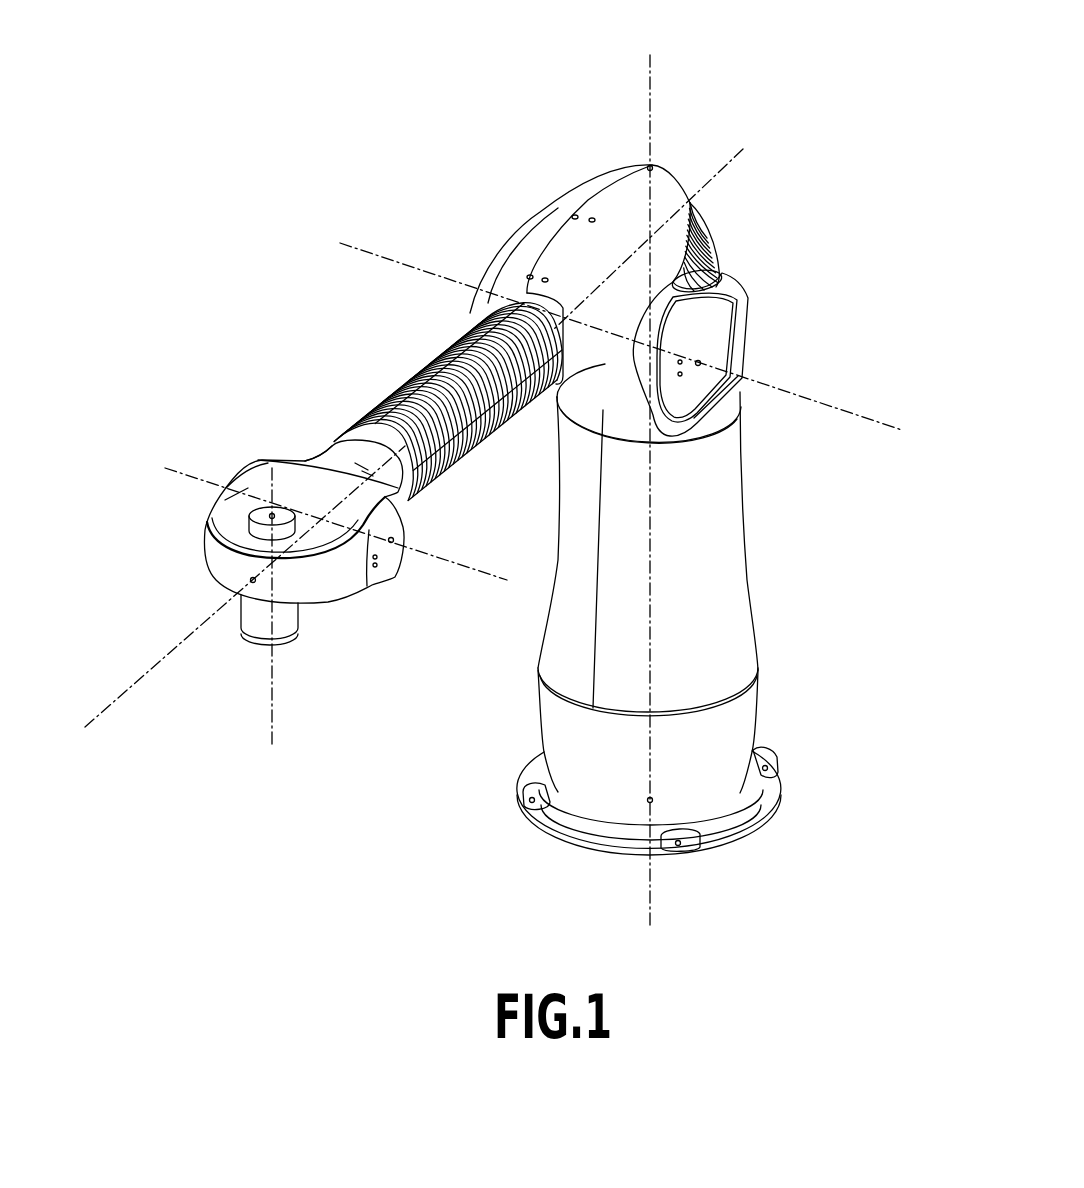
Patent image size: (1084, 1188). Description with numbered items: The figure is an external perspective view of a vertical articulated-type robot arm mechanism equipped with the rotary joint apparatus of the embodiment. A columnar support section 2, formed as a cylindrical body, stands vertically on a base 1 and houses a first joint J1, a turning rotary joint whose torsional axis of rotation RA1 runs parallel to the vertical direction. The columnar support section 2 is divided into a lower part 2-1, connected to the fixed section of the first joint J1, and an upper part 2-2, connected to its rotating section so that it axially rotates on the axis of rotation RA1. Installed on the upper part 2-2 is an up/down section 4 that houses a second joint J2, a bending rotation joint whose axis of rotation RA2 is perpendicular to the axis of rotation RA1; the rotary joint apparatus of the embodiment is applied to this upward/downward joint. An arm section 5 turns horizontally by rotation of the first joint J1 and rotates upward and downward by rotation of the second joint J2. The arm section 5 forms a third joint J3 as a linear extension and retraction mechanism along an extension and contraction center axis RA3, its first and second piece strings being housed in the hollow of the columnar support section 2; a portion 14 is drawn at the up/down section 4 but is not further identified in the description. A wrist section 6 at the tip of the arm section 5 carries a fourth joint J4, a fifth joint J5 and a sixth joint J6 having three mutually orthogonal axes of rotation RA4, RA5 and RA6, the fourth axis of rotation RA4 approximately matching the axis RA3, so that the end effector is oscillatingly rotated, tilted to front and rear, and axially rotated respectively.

The base 1 is at (780, 792).
The columnar support section 2 is at (721, 578).
The lower part 2-1 is at (758, 722).
The upper part 2-2 is at (742, 501).
The up/down section 4 is at (590, 302).
The arm section 5 is at (385, 335).
The wrist section 6 is at (296, 521).
The fin / cover portion 14 is at (712, 238).
The first joint J1 is at (764, 668).
The second joint J2 is at (623, 405).
The third joint J3 is at (463, 313).
The fourth joint J4 is at (337, 423).
The fifth joint J5 is at (390, 583).
The sixth joint J6 is at (243, 645).
The axis of rotation RA1 is at (655, 477).
The axis of rotation RA2 is at (651, 353).
The extension and contraction center axis RA3 is at (663, 216).
The fourth axis of rotation RA4 is at (224, 605).
The fifth axis of rotation RA5 is at (306, 505).
The sixth axis of rotation RA6 is at (271, 623).